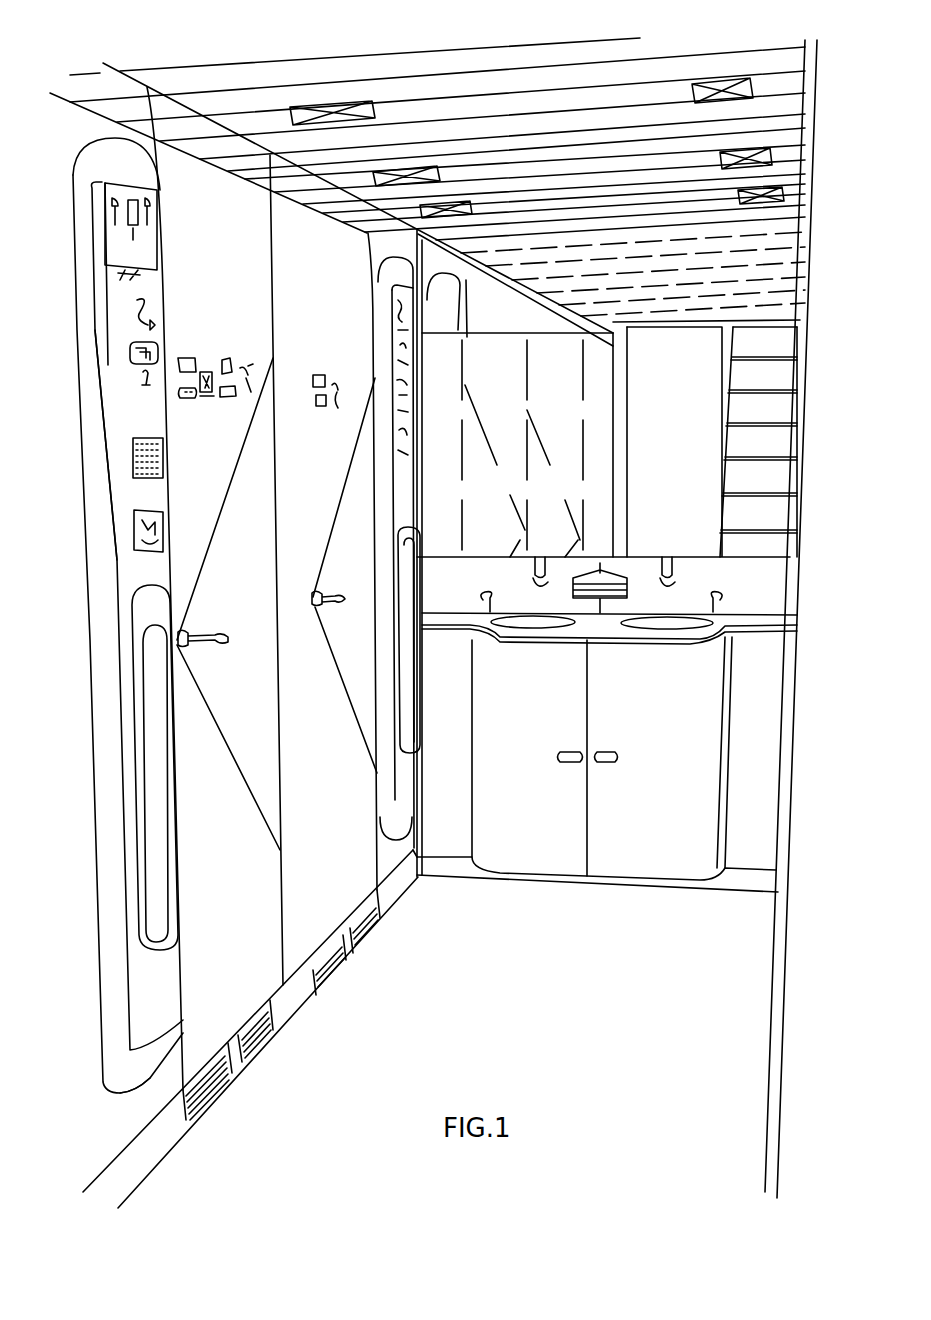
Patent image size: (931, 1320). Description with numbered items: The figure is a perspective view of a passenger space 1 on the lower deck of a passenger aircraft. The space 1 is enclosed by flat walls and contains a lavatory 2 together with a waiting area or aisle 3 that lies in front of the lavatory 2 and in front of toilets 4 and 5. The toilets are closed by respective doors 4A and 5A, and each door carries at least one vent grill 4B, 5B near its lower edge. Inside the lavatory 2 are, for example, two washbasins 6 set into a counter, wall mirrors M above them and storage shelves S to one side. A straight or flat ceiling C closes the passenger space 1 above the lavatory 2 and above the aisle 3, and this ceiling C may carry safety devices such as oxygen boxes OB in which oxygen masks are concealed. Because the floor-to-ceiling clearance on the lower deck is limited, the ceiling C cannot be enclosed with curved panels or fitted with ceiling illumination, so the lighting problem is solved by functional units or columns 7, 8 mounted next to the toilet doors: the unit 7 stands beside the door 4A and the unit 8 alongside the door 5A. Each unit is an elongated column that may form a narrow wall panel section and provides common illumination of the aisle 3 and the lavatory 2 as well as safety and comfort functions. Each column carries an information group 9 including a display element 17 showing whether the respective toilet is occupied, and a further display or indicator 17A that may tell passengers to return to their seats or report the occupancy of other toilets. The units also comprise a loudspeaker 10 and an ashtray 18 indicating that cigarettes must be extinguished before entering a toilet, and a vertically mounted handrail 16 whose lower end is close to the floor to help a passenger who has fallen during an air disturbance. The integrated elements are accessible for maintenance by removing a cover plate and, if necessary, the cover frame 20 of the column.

The passenger space 1 is at (680, 42).
The lavatory 2 is at (766, 583).
The waiting area or aisle 3 is at (460, 1043).
The toilet 4 is at (252, 1045).
The door 4A is at (252, 300).
The vent grill 4B is at (215, 1095).
The toilet 5 is at (372, 920).
The door 5A is at (345, 304).
The vent grill 5B is at (318, 968).
The washbasin 6 is at (533, 627).
The functional unit 7 is at (143, 1052).
The functional unit 8 is at (393, 840).
The information group 9 is at (92, 338).
The loudspeaker 10 is at (133, 458).
The handrail 16 is at (135, 672).
The display element 17 is at (160, 226).
The display or indicator 17A is at (162, 345).
The ashtray 18 is at (160, 535).
The cover frame 20 is at (95, 162).
The oxygen box OB is at (757, 90).
The ceiling C is at (720, 189).
The storage shelves S is at (790, 378).
The wall mirror M is at (508, 383).